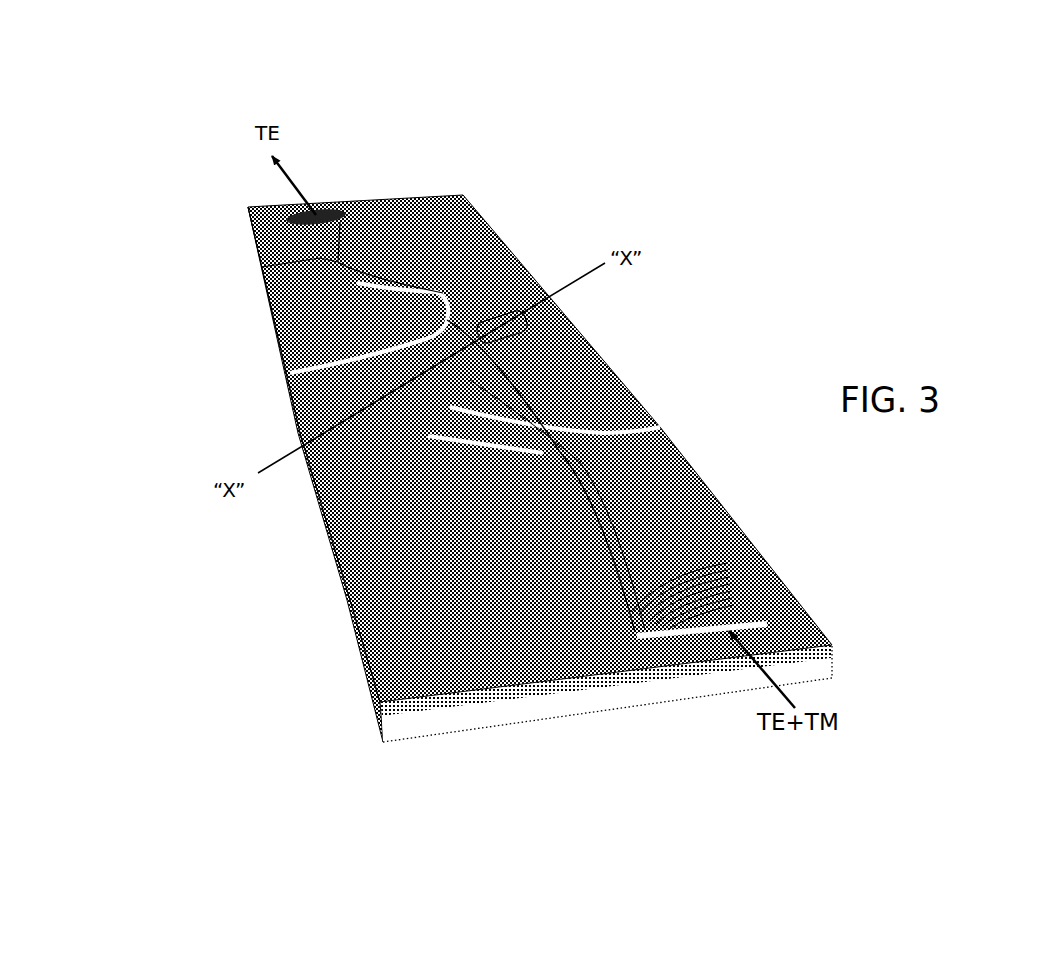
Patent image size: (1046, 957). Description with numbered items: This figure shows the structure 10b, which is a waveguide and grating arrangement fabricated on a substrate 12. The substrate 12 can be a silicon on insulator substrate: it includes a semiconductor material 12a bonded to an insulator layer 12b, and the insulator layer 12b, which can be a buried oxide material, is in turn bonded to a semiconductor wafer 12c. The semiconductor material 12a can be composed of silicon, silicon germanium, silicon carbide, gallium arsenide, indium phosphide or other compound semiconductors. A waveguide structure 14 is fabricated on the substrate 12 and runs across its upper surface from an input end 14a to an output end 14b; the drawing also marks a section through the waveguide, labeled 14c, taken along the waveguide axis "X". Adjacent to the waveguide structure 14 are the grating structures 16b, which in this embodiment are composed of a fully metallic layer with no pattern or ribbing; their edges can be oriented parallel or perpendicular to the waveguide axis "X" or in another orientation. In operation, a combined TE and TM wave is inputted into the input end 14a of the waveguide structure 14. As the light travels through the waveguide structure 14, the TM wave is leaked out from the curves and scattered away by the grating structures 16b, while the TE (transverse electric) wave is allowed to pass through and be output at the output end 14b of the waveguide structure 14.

The structure 10b is at (157, 107).
The substrate 12 is at (580, 507).
The semiconductor material 12a is at (368, 662).
The insulator layer 12b is at (557, 688).
The semiconductor wafer 12c is at (658, 690).
The waveguide structure 14 is at (428, 436).
The input end 14a is at (723, 590).
The output end 14b is at (345, 216).
The cross-section of waveguide 14c is at (477, 315).
The grating structures 16b is at (333, 347).